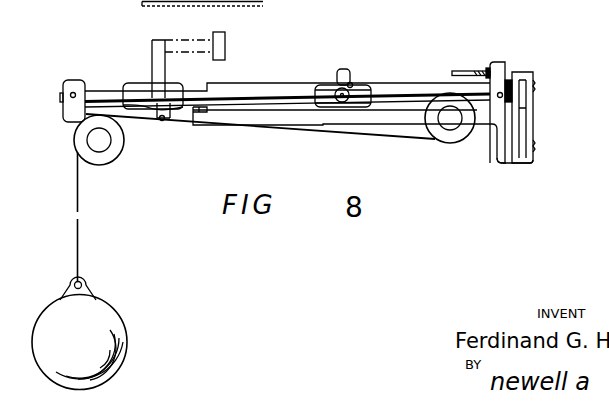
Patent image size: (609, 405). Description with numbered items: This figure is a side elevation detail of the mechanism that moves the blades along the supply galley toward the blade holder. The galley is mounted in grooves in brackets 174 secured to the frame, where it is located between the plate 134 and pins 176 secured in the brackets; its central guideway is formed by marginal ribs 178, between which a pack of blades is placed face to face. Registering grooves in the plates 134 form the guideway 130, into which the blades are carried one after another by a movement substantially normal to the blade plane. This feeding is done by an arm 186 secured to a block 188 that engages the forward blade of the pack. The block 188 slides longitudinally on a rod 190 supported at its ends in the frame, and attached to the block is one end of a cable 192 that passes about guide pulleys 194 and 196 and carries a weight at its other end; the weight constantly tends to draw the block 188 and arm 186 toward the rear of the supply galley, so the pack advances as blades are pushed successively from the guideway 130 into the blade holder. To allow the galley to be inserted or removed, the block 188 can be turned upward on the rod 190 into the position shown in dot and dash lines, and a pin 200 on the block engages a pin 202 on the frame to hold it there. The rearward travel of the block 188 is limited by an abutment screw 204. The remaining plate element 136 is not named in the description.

The guideway 130 is at (533, 100).
The plate 134 is at (512, 153).
The slotted plate 136 is at (528, 117).
The bracket 174 is at (368, 118).
The pin 176 is at (200, 113).
The marginal rib 178 is at (260, 108).
The arm 186 is at (173, 45).
The block 188 is at (159, 68).
The rod 190 is at (278, 93).
The cable 192 is at (388, 93).
The guide pulley 194 is at (448, 138).
The guide pulley 196 is at (118, 158).
The pin 200 is at (152, 122).
The pin 202 is at (184, 100).
The abutment screw 204 is at (470, 72).